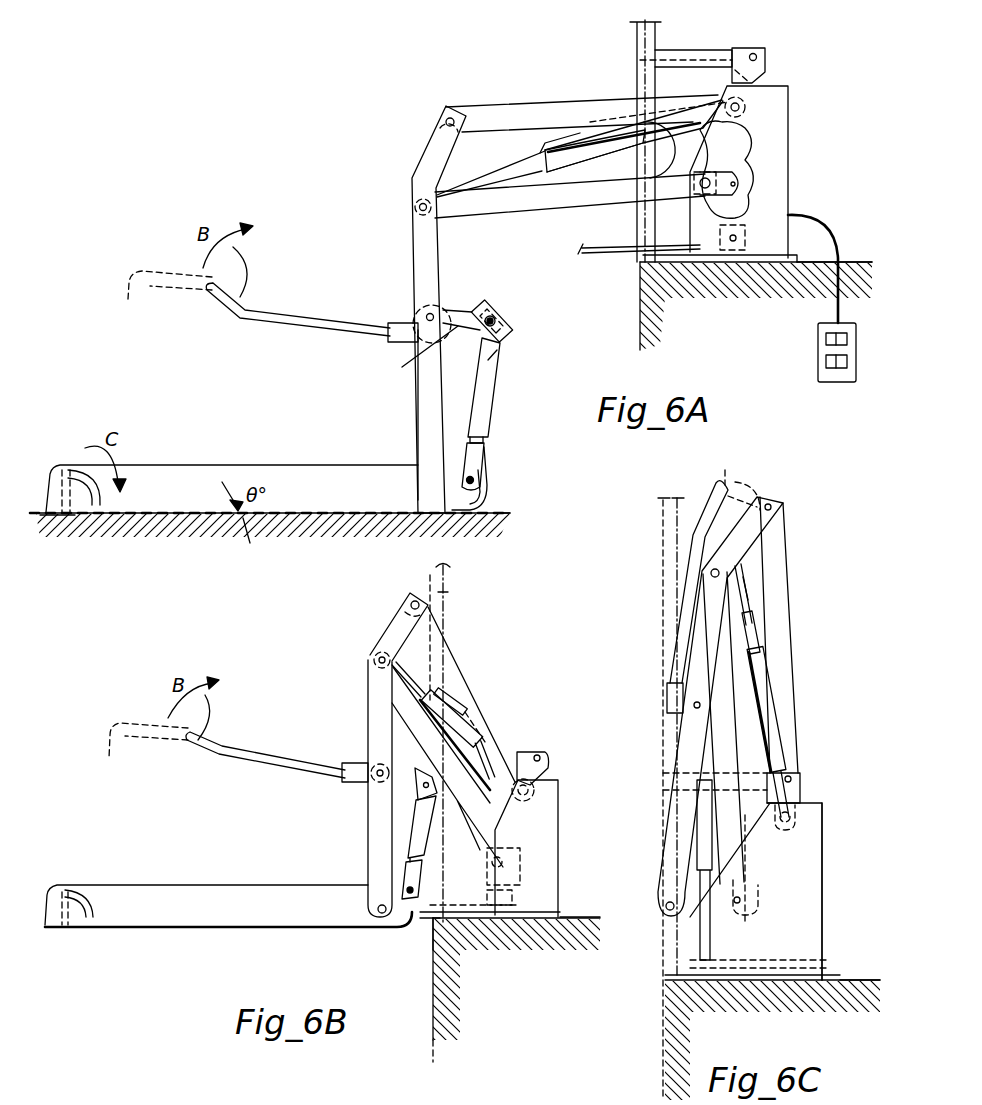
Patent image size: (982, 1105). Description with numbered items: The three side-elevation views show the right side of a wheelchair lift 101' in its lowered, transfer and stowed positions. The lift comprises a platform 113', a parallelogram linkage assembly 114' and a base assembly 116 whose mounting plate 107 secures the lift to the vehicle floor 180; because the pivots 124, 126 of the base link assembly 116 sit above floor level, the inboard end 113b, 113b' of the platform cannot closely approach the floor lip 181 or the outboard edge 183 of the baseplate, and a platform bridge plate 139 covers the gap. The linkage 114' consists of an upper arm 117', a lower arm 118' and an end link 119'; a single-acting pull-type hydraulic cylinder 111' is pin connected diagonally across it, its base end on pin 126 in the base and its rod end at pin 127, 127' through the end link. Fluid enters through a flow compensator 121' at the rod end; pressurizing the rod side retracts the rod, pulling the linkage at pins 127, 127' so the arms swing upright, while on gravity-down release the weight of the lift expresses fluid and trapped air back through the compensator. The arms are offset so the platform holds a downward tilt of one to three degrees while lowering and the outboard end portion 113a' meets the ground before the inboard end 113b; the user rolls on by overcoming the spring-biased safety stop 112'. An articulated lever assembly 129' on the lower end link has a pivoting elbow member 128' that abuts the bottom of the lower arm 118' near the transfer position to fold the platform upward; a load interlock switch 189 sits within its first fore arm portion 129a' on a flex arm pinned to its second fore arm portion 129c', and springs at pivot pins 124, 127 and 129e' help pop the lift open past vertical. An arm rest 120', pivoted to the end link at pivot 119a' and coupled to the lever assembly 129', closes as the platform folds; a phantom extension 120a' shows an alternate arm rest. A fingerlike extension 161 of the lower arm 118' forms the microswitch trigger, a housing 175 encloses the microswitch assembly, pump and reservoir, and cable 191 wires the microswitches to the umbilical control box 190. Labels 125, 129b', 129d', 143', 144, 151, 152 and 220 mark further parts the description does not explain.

In FIG. 6C, the wheelchair lift 101' is at (630, 800).
In FIG. 6B, the mounting plate 107 is at (510, 901).
In FIG. 6A, the single-acting hydraulic cylinder 111' is at (580, 148).
In FIG. 6B, the single-acting hydraulic cylinder 111' is at (467, 726).
In FIG. 6C, the single-acting hydraulic cylinder 111' is at (788, 690).
In FIG. 6A, the safety stop 112' is at (62, 537).
In FIG. 6A, the platform 113' is at (232, 473).
In FIG. 6B, the platform 113' is at (228, 889).
In FIG. 6C, the platform 113' is at (787, 572).
In FIG. 6A, the outboard end portion 113a' is at (61, 475).
In FIG. 6A, the inboard end portion 113b is at (496, 478).
In FIG. 6B, the inboard end portion 113b' is at (381, 931).
In FIG. 6A, the parallelogram linkage assembly 114' is at (429, 291).
In FIG. 6C, the parallelogram linkage assembly 114' is at (812, 635).
In FIG. 6A, the base assembly 116 is at (792, 148).
In FIG. 6B, the base assembly 116 is at (526, 848).
In FIG. 6C, the base assembly 116 is at (826, 934).
In FIG. 6A, the upper arm 117' is at (587, 102).
In FIG. 6B, the upper arm 117' is at (454, 705).
In FIG. 6C, the upper arm 117' is at (804, 727).
In FIG. 6A, the lower arm 118' is at (570, 206).
In FIG. 6B, the lower arm 118' is at (447, 785).
In FIG. 6C, the lower arm 118' is at (673, 728).
In FIG. 6A, the end link 119' is at (391, 373).
In FIG. 6B, the end link 119' is at (356, 788).
In FIG. 6C, the end link 119' is at (697, 706).
In FIG. 6A, the arm rest pivot 119a' is at (404, 313).
In FIG. 6B, the arm rest pivot 119a' is at (353, 754).
In FIG. 6C, the arm rest pivot 119a' is at (652, 713).
In FIG. 6A, the arm rest 120' is at (298, 309).
In FIG. 6B, the arm rest 120' is at (277, 764).
In FIG. 6C, the arm rest 120' is at (697, 589).
In FIG. 6A, the arm rest extension 120a' is at (166, 295).
In FIG. 6B, the arm rest extension 120a' is at (148, 747).
In FIG. 6C, the arm rest extension 120a' is at (767, 486).
In FIG. 6A, the flow compensator 121' is at (535, 149).
In FIG. 6B, the flow compensator 121' is at (478, 704).
In FIG. 6C, the flow compensator 121' is at (792, 632).
In FIG. 6A, the pivot pin 124 is at (720, 165).
In FIG. 6B, the pivot pin 124 is at (519, 866).
In FIG. 6A, the upper arm outer pivot 125 is at (452, 117).
In FIG. 6B, the upper arm outer pivot 125 is at (410, 605).
In FIG. 6A, the pin 126 is at (740, 116).
In FIG. 6B, the pin 126 is at (536, 796).
In FIG. 6C, the pin 126 is at (785, 817).
In FIG. 6B, the pin connection 127 is at (360, 656).
In FIG. 6A, the pin connection 127' is at (398, 210).
In FIG. 6C, the pin connection 127' is at (715, 573).
In FIG. 6A, the pivoting elbow member 128' is at (478, 309).
In FIG. 6A, the articulated lever assembly 129' is at (518, 388).
In FIG. 6B, the articulated lever assembly 129' is at (383, 813).
In FIG. 6A, the first fore arm portion 129a' is at (524, 377).
In FIG. 6A, the tilt cylinder link 129b' is at (407, 354).
In FIG. 6A, the second fore arm portion 129c' is at (507, 460).
In FIG. 6A, the tilt cylinder lower pivot 129d' is at (417, 460).
In FIG. 6A, the pivot pin 129e' is at (526, 311).
In FIG. 6B, the platform bridge plate 139 is at (436, 865).
In FIG. 6A, the upper mounting bracket 143' is at (686, 45).
In FIG. 6A, the mounting block 144 is at (773, 49).
In FIG. 6A, the ground contact point 151 is at (510, 513).
In FIG. 6B, the vertical reference axis 152 is at (468, 591).
In FIG. 6C, the fingerlike extension 161 is at (745, 925).
In FIG. 6A, the housing 175 is at (785, 182).
In FIG. 6C, the housing 175 is at (813, 872).
In FIG. 6A, the vehicle floor 180 is at (848, 262).
In FIG. 6B, the vehicle floor 180 is at (588, 917).
In FIG. 6C, the vehicle floor 180 is at (848, 980).
In FIG. 6B, the floor lip 181 is at (433, 926).
In FIG. 6B, the outboard edge 183 is at (450, 950).
In FIG. 6B, the load interlock switch 189 is at (402, 840).
In FIG. 6A, the umbilical control box 190 is at (818, 360).
In FIG. 6A, the cable 191 is at (836, 300).
In FIG. 6A, the handle sleeve 220 is at (388, 338).